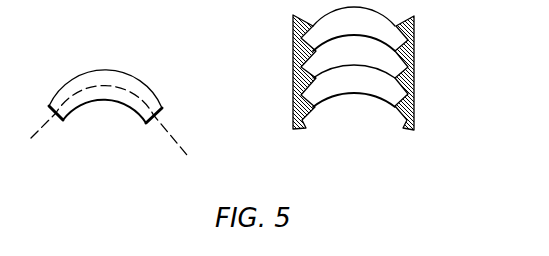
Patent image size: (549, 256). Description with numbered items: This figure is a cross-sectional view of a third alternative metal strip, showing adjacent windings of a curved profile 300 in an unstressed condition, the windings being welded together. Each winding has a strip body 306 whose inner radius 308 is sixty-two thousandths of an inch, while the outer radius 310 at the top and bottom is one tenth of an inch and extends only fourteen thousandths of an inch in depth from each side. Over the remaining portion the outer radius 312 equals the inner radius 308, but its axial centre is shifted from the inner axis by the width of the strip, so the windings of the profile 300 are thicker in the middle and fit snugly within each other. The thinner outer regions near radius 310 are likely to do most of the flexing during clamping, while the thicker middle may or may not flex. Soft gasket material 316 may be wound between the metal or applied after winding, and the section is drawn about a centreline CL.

The curved profile 300 is at (398, 83).
The curved segment 306 is at (131, 90).
The inner radius 308 is at (85, 106).
The outer radius 310 is at (60, 91).
The outer radius 312 is at (97, 71).
The soft gasket material 316 is at (445, 123).
The centerline CL is at (174, 133).